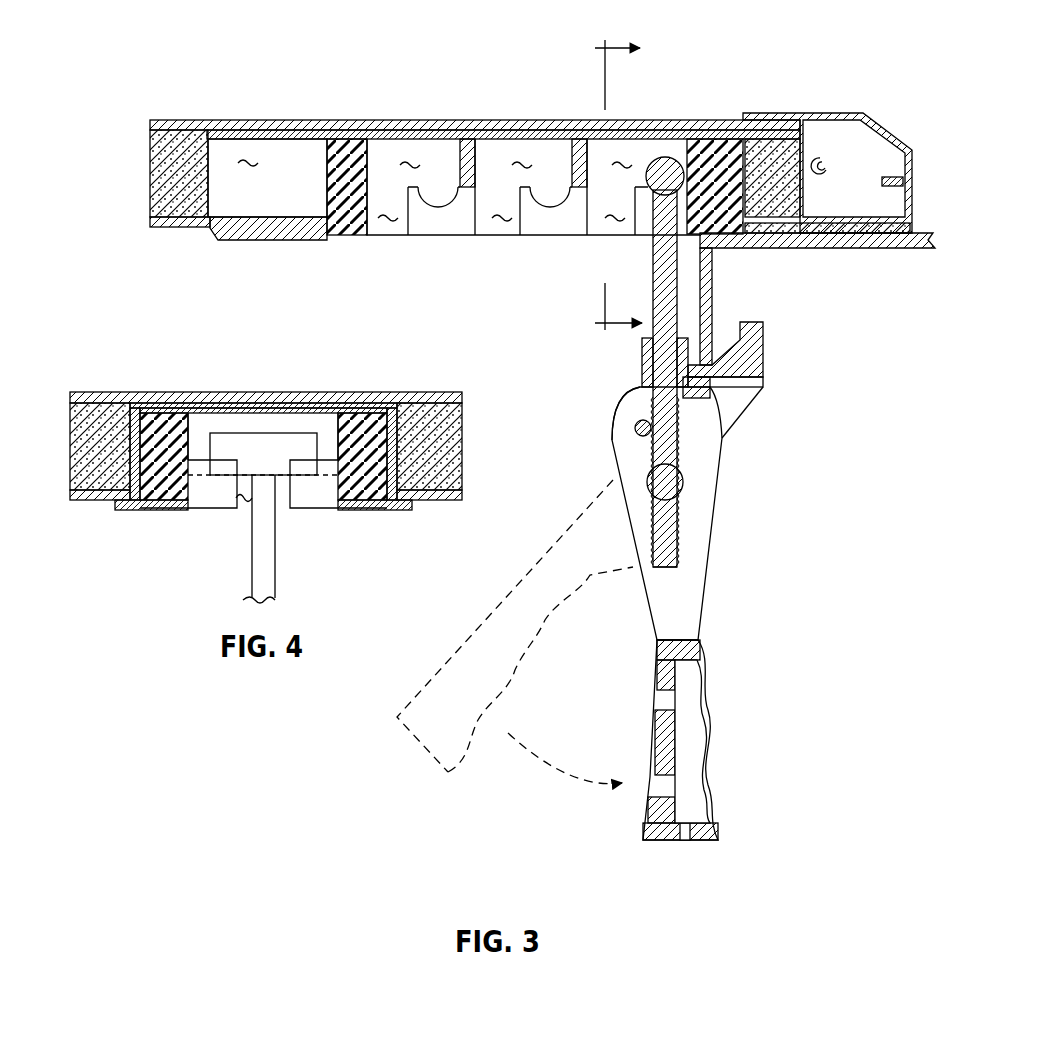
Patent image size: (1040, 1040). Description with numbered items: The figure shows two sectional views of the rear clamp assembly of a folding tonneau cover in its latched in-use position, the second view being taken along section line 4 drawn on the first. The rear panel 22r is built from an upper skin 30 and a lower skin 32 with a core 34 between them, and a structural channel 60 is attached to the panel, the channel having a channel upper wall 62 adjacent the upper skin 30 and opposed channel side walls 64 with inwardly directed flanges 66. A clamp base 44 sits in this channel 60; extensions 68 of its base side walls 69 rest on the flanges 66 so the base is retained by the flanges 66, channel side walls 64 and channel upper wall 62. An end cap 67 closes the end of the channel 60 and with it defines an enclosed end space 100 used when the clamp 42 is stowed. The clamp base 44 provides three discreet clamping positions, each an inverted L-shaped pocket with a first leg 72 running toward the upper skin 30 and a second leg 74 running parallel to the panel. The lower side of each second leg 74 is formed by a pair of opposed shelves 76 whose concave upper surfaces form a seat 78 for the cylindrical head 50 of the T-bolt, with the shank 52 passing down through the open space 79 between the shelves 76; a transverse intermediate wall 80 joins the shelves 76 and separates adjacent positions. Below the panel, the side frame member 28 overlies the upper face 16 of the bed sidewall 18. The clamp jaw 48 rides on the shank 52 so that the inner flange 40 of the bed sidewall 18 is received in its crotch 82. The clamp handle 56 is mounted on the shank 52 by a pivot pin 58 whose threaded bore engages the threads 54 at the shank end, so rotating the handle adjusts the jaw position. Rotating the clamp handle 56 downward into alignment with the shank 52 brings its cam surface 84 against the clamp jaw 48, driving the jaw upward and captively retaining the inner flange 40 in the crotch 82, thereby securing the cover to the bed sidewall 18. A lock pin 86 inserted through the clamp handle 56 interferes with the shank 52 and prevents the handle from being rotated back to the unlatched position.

In FIG. 3, the rear panel 22r is at (280, 110).
In FIG. 3, the end space 100 is at (247, 152).
In FIG. 3, the upper skin 30 is at (192, 122).
In FIG. 4, the upper skin 30 is at (137, 392).
In FIG. 3, the core 34 is at (153, 180).
In FIG. 4, the core 34 is at (75, 417).
In FIG. 3, the lower skin 32 is at (185, 228).
In FIG. 4, the lower skin 32 is at (90, 500).
In FIG. 3, the end cap 67 is at (243, 241).
In FIG. 3, the clamp base 44 is at (328, 238).
In FIG. 3, the second leg 74 is at (413, 158).
In FIG. 3, the seat 78 is at (437, 203).
In FIG. 3, the transverse intermediate wall 80 is at (488, 138).
In FIG. 3, the first leg 72 is at (385, 222).
In FIG. 3, the shelves 76 is at (430, 225).
In FIG. 4, the shelves 76 is at (213, 503).
In FIG. 3, the head 50 is at (672, 158).
In FIG. 4, the head 50 is at (226, 440).
In FIG. 3, the side frame member 28 is at (835, 113).
In FIG. 3, the upper face 16 is at (907, 216).
In FIG. 3, the inner flange 40 is at (714, 272).
In FIG. 3, the crotch 82 is at (728, 385).
In FIG. 3, the clamp jaw 48 is at (763, 350).
In FIG. 3, the bed sidewall 18 is at (893, 252).
In FIG. 3, the shank 52 is at (663, 358).
In FIG. 4, the shank 52 is at (270, 562).
In FIG. 3, the cam surface 84 is at (620, 400).
In FIG. 3, the lock pin 86 is at (634, 428).
In FIG. 3, the pivot pin 58 is at (684, 482).
In FIG. 3, the clamp 42 is at (724, 510).
In FIG. 3, the threads 54 is at (675, 533).
In FIG. 3, the clamp handle 56 is at (690, 680).
In FIG. 3, the section line 4- 4 is at (615, 188).
In FIG. 4, the channel 60 is at (250, 390).
In FIG. 4, the channel upper wall 62 is at (330, 410).
In FIG. 4, the extensions 68 is at (368, 426).
In FIG. 4, the channel side walls 64 is at (395, 442).
In FIG. 4, the base side walls 69 is at (180, 492).
In FIG. 4, the flanges 66 is at (390, 508).
In FIG. 4, the open space 79 is at (243, 505).